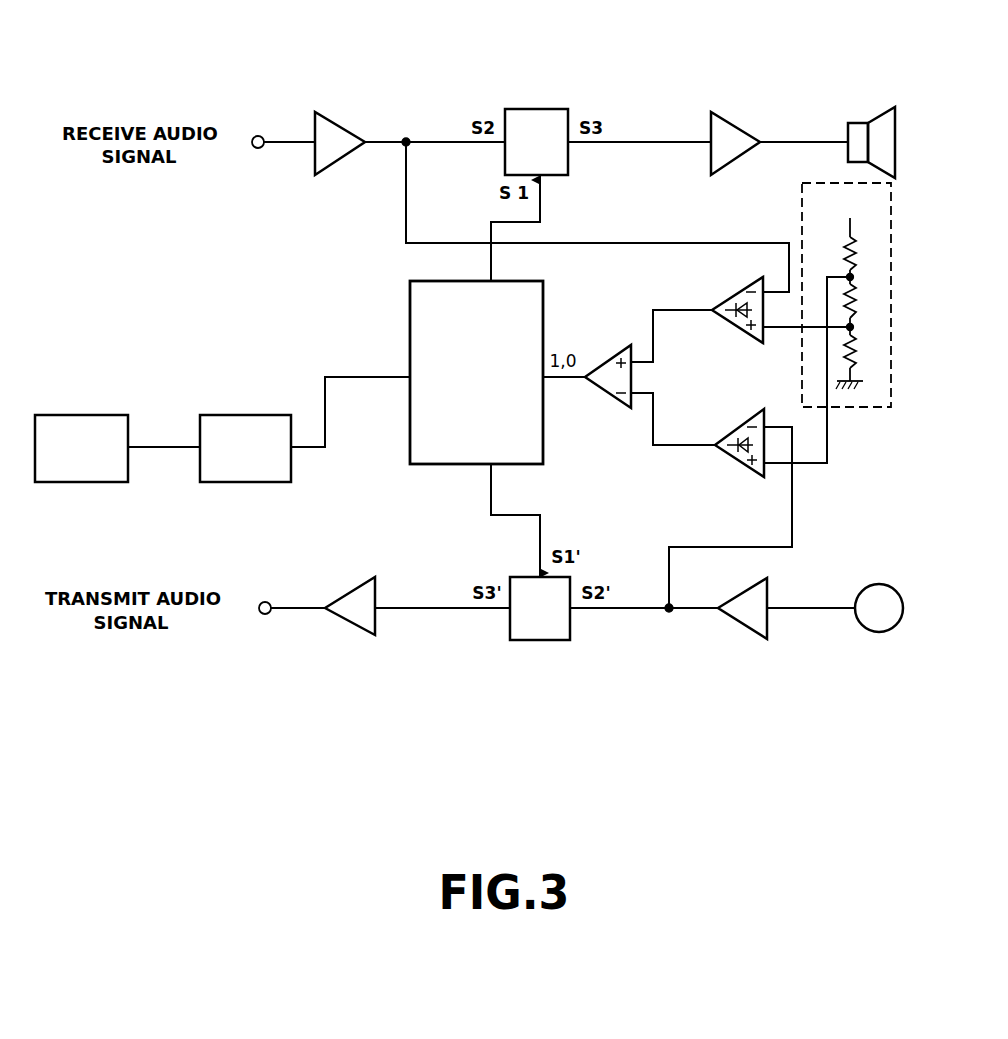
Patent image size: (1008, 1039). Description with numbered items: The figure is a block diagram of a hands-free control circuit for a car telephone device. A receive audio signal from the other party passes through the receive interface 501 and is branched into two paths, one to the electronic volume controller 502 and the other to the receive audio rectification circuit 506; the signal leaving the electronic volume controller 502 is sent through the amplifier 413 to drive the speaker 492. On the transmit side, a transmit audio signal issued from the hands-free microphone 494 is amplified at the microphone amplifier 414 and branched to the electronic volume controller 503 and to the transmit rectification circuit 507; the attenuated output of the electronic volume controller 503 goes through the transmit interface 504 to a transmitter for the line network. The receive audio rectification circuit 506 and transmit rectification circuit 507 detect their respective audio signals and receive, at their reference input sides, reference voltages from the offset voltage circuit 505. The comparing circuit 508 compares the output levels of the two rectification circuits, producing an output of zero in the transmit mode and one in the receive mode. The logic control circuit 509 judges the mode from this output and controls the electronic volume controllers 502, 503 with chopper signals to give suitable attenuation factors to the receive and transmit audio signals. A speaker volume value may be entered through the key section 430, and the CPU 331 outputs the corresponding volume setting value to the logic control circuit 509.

The receive interface 501 is at (335, 118).
The electronic volume controller 502 is at (540, 108).
The amplifier 413 is at (728, 110).
The speaker 492 is at (883, 106).
The logic control circuit 509 is at (410, 305).
The receive audio rectification circuit 506 is at (739, 292).
The comparing circuit 508 is at (606, 394).
The transmit rectification circuit 507 is at (737, 460).
The offset voltage circuit 505 is at (866, 408).
The key section 430 is at (80, 484).
The CPU 331 is at (247, 484).
The transmit interface 504 is at (356, 637).
The electronic volume controller 503 is at (543, 642).
The microphone amplifier 414 is at (746, 631).
The hands-free microphone 494 is at (877, 632).